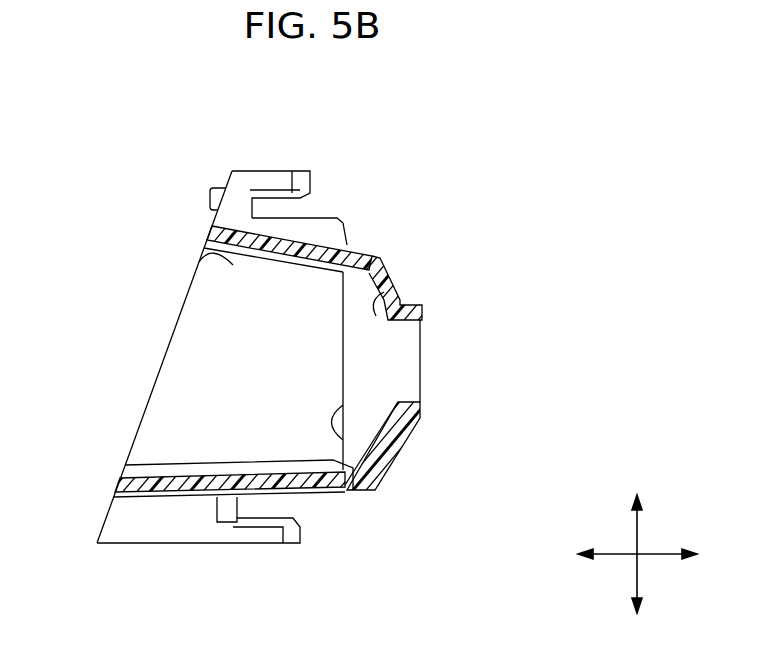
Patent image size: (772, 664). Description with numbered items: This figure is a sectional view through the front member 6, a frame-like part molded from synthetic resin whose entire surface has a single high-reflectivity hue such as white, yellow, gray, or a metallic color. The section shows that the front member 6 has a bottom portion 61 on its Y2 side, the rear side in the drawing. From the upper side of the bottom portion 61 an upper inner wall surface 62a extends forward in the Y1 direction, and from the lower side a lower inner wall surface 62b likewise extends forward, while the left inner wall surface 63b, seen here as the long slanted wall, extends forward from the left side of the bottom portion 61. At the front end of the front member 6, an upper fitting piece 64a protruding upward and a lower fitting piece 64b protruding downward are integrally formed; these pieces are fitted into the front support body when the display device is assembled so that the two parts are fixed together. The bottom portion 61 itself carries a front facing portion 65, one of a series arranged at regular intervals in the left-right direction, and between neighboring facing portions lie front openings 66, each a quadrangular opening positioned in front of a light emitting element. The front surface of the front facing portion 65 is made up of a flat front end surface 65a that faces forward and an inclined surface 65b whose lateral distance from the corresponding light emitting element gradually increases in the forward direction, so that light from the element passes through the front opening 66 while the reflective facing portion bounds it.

The front member 6 is at (303, 162).
The bottom portion 61 is at (372, 298).
The upper inner wall surface 62a is at (197, 263).
The lower inner wall surface 62b is at (180, 472).
The left inner wall surface 63b is at (175, 392).
The upper fitting piece 64a is at (262, 173).
The lower fitting piece 64b is at (248, 533).
The front facing portion 65 is at (357, 358).
The flat front end surface 65a is at (325, 430).
The inclined surface 65b is at (363, 400).
The front opening 66 is at (407, 358).